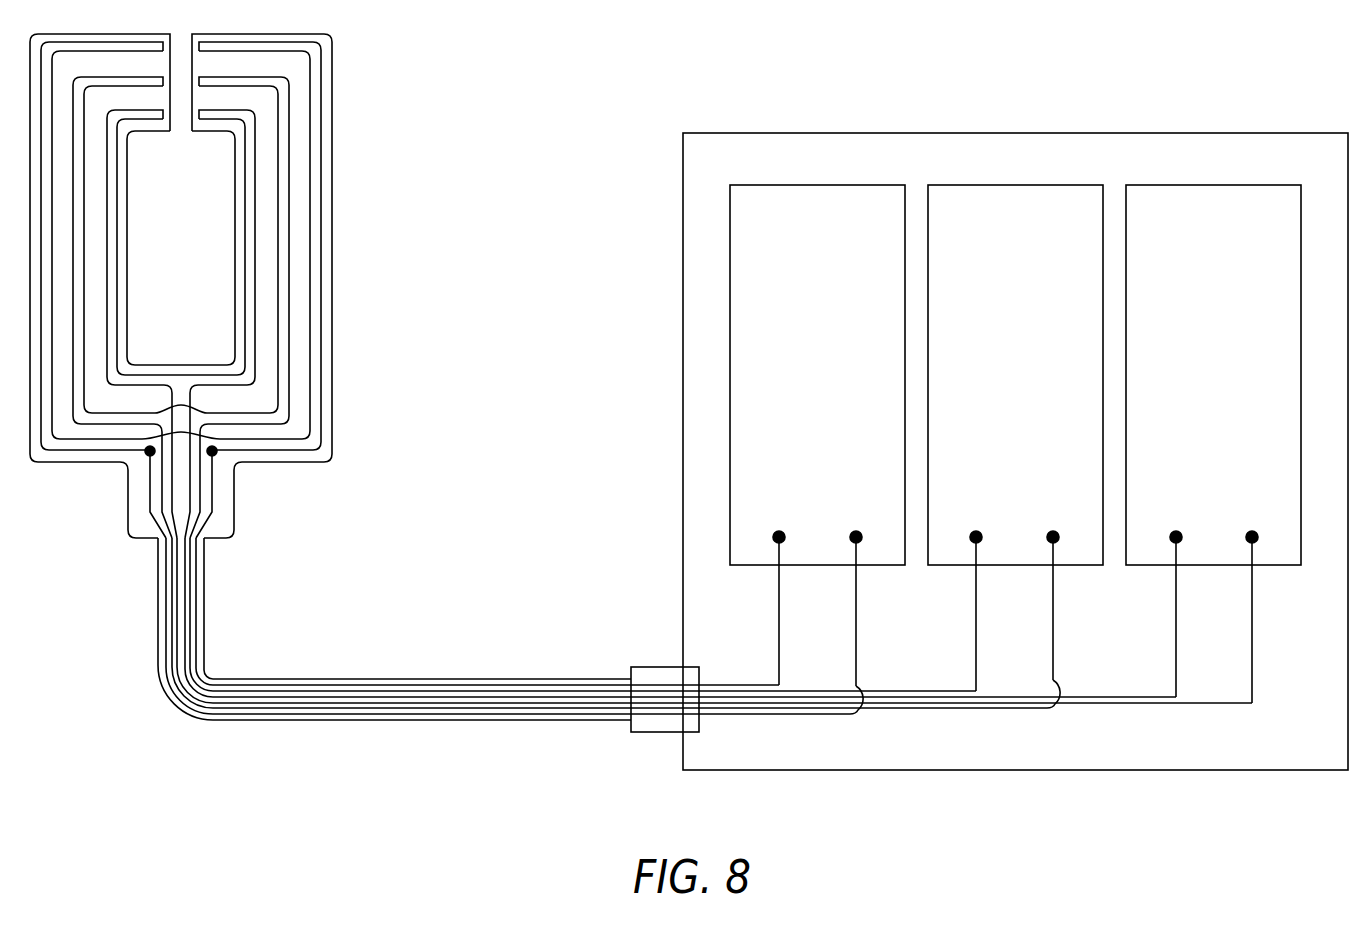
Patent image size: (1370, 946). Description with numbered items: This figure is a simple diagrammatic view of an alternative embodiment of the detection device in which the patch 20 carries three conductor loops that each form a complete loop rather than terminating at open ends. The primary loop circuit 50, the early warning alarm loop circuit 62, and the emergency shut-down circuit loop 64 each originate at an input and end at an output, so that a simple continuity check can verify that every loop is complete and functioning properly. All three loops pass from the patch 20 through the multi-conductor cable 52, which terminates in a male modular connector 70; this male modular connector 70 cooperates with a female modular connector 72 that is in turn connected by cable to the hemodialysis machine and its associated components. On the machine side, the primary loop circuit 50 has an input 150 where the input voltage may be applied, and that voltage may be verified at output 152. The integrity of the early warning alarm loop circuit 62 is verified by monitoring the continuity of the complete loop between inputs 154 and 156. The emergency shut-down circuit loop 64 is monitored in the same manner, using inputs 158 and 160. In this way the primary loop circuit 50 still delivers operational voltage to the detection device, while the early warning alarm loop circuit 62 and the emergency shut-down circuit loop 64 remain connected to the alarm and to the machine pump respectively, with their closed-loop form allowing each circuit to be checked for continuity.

The patch 20 is at (222, 500).
The primary loop circuit 50 is at (253, 156).
The early warning alarm loop circuit 62 is at (286, 238).
The emergency shut-down circuit loop 64 is at (322, 326).
The multi-conductor cable 52 is at (377, 676).
The male modular connector 70 is at (640, 735).
The female modular connector 72 is at (672, 735).
The input 150 is at (1151, 510).
The output 152 is at (1227, 510).
The input 154 is at (951, 510).
The input 156 is at (1028, 510).
The input 158 is at (754, 510).
The input 160 is at (831, 510).